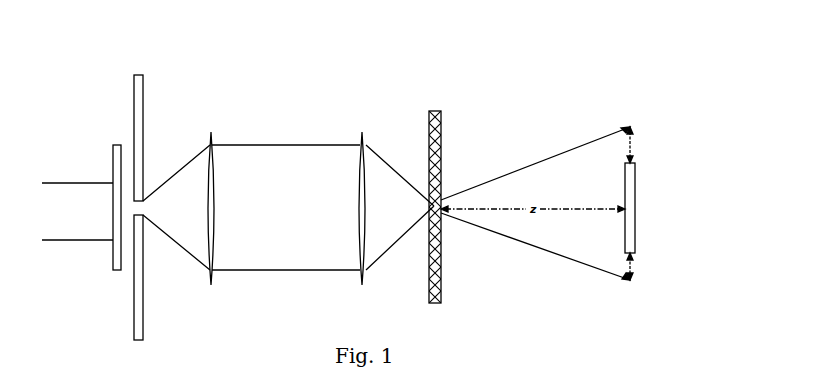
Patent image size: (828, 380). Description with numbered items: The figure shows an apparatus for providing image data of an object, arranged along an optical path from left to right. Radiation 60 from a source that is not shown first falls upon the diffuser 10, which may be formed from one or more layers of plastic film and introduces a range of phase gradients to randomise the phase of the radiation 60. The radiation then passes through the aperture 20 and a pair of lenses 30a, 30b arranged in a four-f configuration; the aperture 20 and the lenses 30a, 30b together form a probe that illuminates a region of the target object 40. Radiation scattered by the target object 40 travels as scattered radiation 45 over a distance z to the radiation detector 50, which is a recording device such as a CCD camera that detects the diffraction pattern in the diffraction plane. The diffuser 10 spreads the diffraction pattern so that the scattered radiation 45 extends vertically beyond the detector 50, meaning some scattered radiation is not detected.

The diffuser 10 is at (117, 138).
The aperture 20 is at (140, 67).
The first lens 30a is at (211, 128).
The second lens 30b is at (361, 128).
The target object 40 is at (434, 106).
The scattered radiation 45 is at (547, 158).
The radiation detector 50 is at (637, 160).
The radiation 60 is at (77, 211).